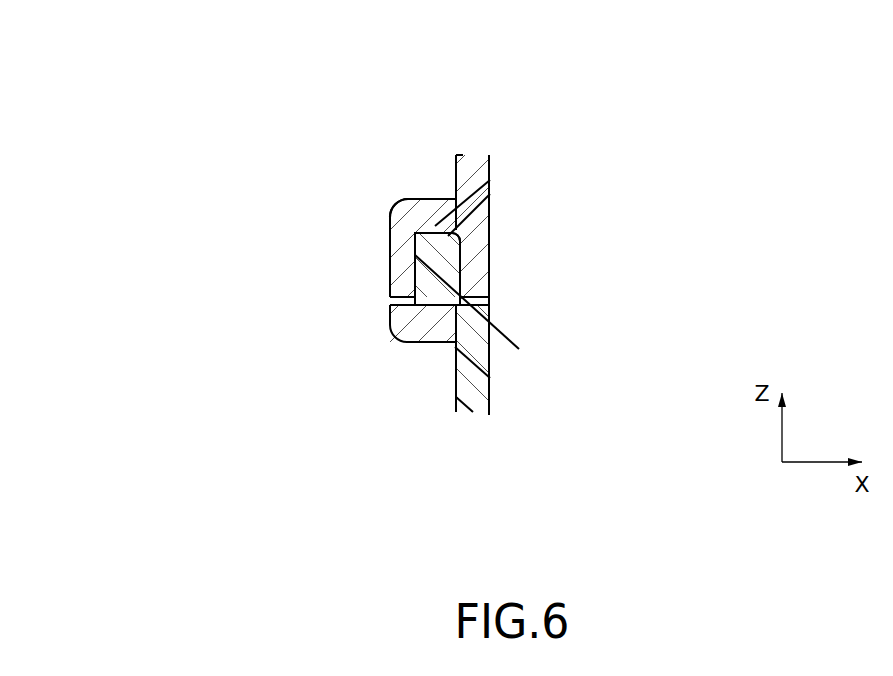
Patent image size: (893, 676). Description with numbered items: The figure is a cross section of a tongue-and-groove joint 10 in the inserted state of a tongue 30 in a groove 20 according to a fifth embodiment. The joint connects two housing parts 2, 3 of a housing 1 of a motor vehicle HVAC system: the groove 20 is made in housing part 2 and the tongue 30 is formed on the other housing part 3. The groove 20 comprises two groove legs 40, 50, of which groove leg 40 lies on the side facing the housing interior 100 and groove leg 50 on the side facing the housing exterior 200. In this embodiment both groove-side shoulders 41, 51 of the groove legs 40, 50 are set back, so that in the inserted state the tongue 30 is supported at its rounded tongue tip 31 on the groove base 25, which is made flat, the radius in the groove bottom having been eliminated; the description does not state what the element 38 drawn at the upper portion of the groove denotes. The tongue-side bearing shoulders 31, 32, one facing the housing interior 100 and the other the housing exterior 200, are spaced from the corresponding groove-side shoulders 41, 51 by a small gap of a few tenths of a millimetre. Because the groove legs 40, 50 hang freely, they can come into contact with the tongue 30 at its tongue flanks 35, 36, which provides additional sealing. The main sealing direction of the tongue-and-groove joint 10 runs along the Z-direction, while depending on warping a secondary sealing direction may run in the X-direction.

The housing 1 is at (232, 100).
The housing part 2 is at (478, 132).
The housing part 3 is at (478, 432).
The tongue-and-groove joint 10 is at (563, 273).
The groove 20 is at (428, 256).
The groove base 25 is at (440, 220).
The tongue 30 is at (471, 331).
The tongue-side shoulder 31 is at (519, 349).
The tongue-side shoulder 32 is at (413, 313).
The tongue flank 35 is at (462, 250).
The tongue flank 36 is at (415, 257).
The chamfer 38 is at (490, 180).
The groove leg 40 is at (430, 242).
The groove-side shoulder 41 is at (470, 283).
The groove leg 50 is at (385, 261).
The groove-side shoulder 51 is at (403, 284).
The housing interior 100 is at (757, 316).
The housing exterior 200 is at (148, 316).